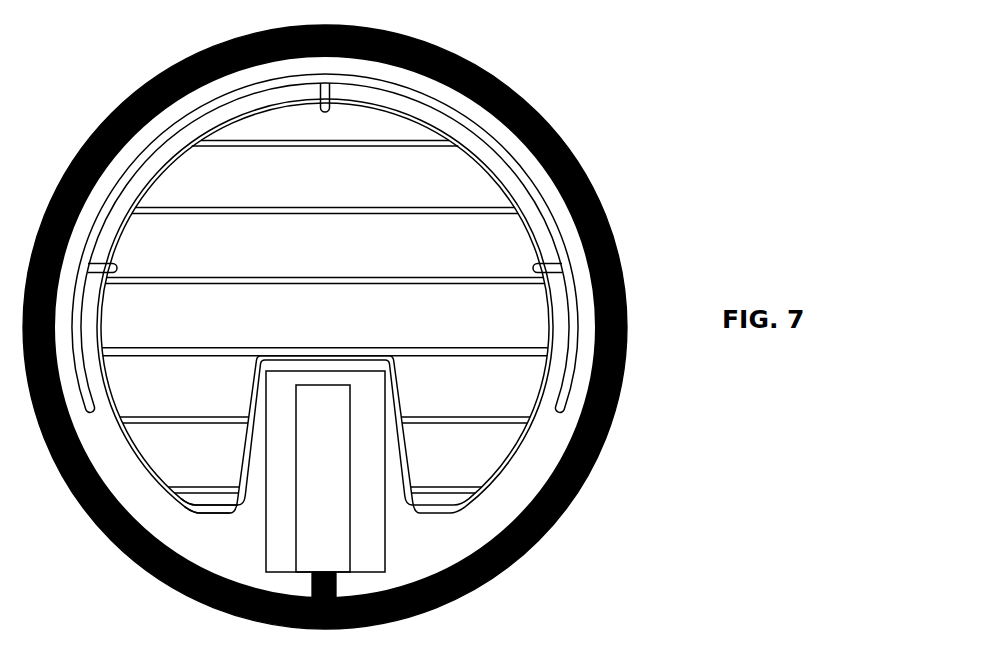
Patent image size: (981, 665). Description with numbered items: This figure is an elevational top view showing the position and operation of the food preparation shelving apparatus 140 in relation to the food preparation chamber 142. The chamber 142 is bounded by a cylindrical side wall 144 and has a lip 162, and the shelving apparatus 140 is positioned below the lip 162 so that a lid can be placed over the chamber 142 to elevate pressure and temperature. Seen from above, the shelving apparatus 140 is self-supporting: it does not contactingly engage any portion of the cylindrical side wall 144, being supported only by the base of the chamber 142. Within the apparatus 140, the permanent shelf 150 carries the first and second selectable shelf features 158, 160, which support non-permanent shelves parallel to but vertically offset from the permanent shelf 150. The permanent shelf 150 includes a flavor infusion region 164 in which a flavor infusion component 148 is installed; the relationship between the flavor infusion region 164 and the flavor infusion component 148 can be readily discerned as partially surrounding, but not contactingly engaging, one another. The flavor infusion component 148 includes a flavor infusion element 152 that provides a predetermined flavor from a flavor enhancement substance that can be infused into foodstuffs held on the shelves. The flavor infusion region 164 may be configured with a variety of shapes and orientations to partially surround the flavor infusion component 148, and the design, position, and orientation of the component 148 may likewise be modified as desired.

The food preparation shelving apparatus 140 is at (333, 327).
The food preparation chamber 142 is at (340, 327).
The cylindrical side wall 144 is at (82, 442).
The flavor infusion component 148 is at (385, 567).
The permanent shelf 150 is at (190, 513).
The flavor infusion element 152 is at (296, 493).
The first selectable shelf feature 158 is at (128, 258).
The second selectable shelf feature 160 is at (328, 122).
The lip 162 is at (610, 435).
The flavor infusion region 164 is at (325, 322).